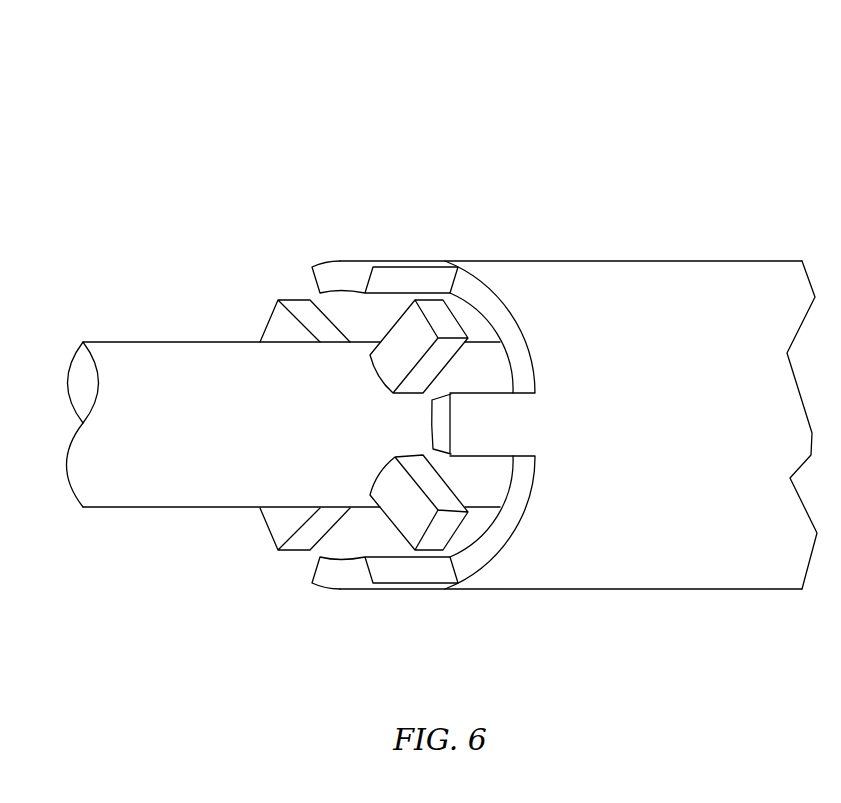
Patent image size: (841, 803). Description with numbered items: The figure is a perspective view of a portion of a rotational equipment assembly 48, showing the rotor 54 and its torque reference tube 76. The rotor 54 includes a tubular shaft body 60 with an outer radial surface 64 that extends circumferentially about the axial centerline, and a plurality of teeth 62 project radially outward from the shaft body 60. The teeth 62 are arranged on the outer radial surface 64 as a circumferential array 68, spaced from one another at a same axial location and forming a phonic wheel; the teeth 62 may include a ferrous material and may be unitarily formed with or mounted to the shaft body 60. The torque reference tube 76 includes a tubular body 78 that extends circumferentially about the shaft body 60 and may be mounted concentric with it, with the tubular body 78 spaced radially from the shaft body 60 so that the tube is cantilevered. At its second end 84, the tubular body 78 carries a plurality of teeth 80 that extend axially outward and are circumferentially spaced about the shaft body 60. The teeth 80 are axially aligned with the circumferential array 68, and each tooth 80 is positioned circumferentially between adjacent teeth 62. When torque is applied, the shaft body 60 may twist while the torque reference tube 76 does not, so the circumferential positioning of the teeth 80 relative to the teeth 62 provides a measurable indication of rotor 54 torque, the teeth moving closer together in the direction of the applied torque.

The coupling assembly 48 is at (530, 361).
The rotor 54 is at (578, 386).
The shaft body 60 is at (284, 433).
The teeth 62 is at (270, 322).
The outer radial surface 64 is at (147, 342).
The circumferential array 68 is at (404, 364).
The torque reference tube 76 is at (699, 594).
The tubular body 78 is at (710, 273).
The teeth 80 is at (336, 270).
The second end 84 is at (498, 293).